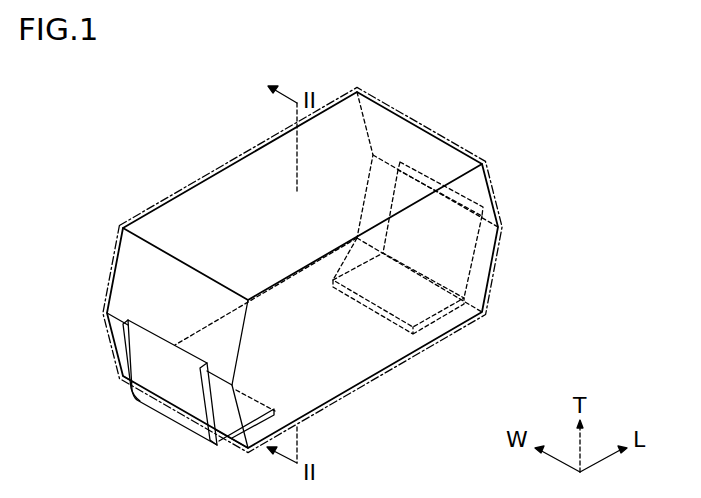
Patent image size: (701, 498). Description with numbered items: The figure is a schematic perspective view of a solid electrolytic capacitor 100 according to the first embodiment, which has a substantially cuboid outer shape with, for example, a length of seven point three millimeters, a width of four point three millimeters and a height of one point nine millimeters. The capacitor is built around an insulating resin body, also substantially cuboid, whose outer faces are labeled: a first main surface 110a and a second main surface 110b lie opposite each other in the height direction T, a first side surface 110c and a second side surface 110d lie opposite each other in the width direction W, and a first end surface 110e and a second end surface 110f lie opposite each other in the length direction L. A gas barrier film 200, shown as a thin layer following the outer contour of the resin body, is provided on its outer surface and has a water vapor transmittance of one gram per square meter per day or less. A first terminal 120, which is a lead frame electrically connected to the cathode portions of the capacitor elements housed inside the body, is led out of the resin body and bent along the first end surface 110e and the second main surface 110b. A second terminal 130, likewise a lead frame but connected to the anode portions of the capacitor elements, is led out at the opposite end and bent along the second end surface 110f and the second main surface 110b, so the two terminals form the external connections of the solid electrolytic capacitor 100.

The solid electrolytic capacitor 100 is at (95, 161).
The first main surface 110a is at (258, 176).
The second main surface 110b is at (312, 382).
The first side surface 110c is at (210, 223).
The second side surface 110d is at (375, 322).
The first end surface 110e is at (125, 278).
The second end surface 110f is at (403, 143).
The first terminal 120 is at (158, 402).
The second terminal 130 is at (460, 195).
The gas barrier film 200 is at (110, 338).